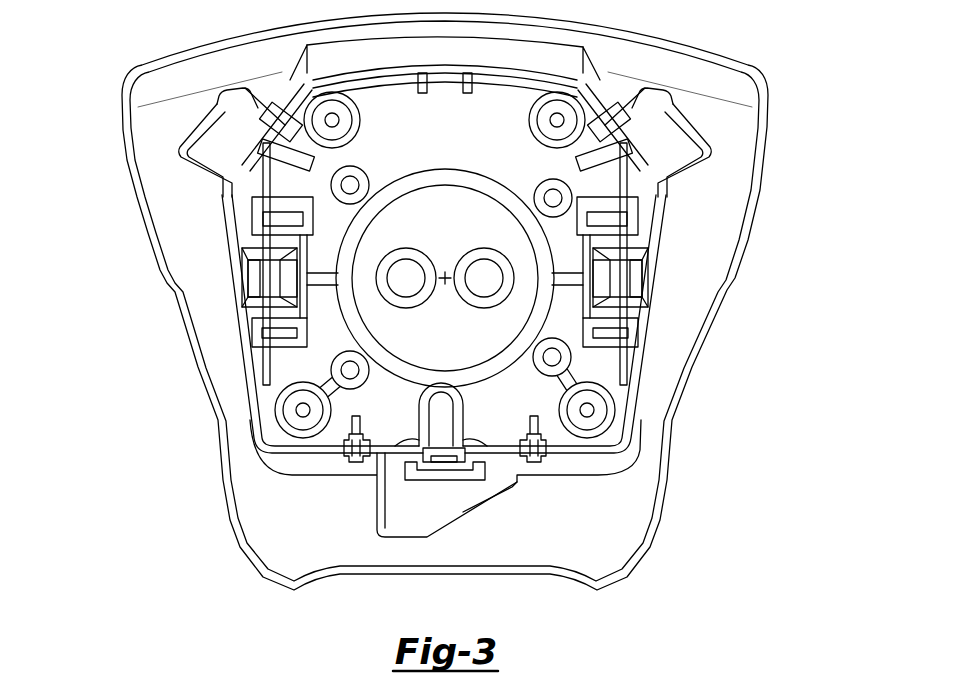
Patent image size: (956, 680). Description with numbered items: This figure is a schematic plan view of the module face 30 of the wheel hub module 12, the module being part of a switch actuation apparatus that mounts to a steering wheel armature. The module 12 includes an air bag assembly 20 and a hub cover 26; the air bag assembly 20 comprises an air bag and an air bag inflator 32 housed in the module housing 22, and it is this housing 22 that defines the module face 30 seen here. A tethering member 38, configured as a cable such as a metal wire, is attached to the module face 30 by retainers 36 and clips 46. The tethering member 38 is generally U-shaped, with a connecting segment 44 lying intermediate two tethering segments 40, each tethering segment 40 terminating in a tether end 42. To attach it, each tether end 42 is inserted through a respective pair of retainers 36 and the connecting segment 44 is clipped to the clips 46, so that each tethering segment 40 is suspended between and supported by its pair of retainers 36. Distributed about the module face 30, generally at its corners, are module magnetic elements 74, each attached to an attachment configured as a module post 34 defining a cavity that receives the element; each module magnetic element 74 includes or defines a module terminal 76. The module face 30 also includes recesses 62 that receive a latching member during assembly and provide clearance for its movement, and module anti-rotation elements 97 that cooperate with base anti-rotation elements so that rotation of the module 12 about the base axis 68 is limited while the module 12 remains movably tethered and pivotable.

The module 12 is at (808, 81).
The air bag assembly 20 is at (188, 225).
The module housing 22 is at (268, 471).
The hub cover 26 is at (122, 133).
The module face 30 is at (597, 463).
The air bag inflator 32 is at (505, 186).
The module post 34 is at (362, 122).
The retainer 36 is at (250, 217).
The tethering member 38 is at (315, 455).
The tethering segment 40 is at (263, 244).
The tether end 42 is at (240, 165).
The connecting segment 44 is at (466, 420).
The clip 46 is at (353, 462).
The recess 62 is at (252, 277).
The base axis 68 is at (445, 285).
The module magnetic element 74 is at (348, 140).
The module terminal 76 is at (333, 118).
The module anti-rotation element 97 is at (247, 123).